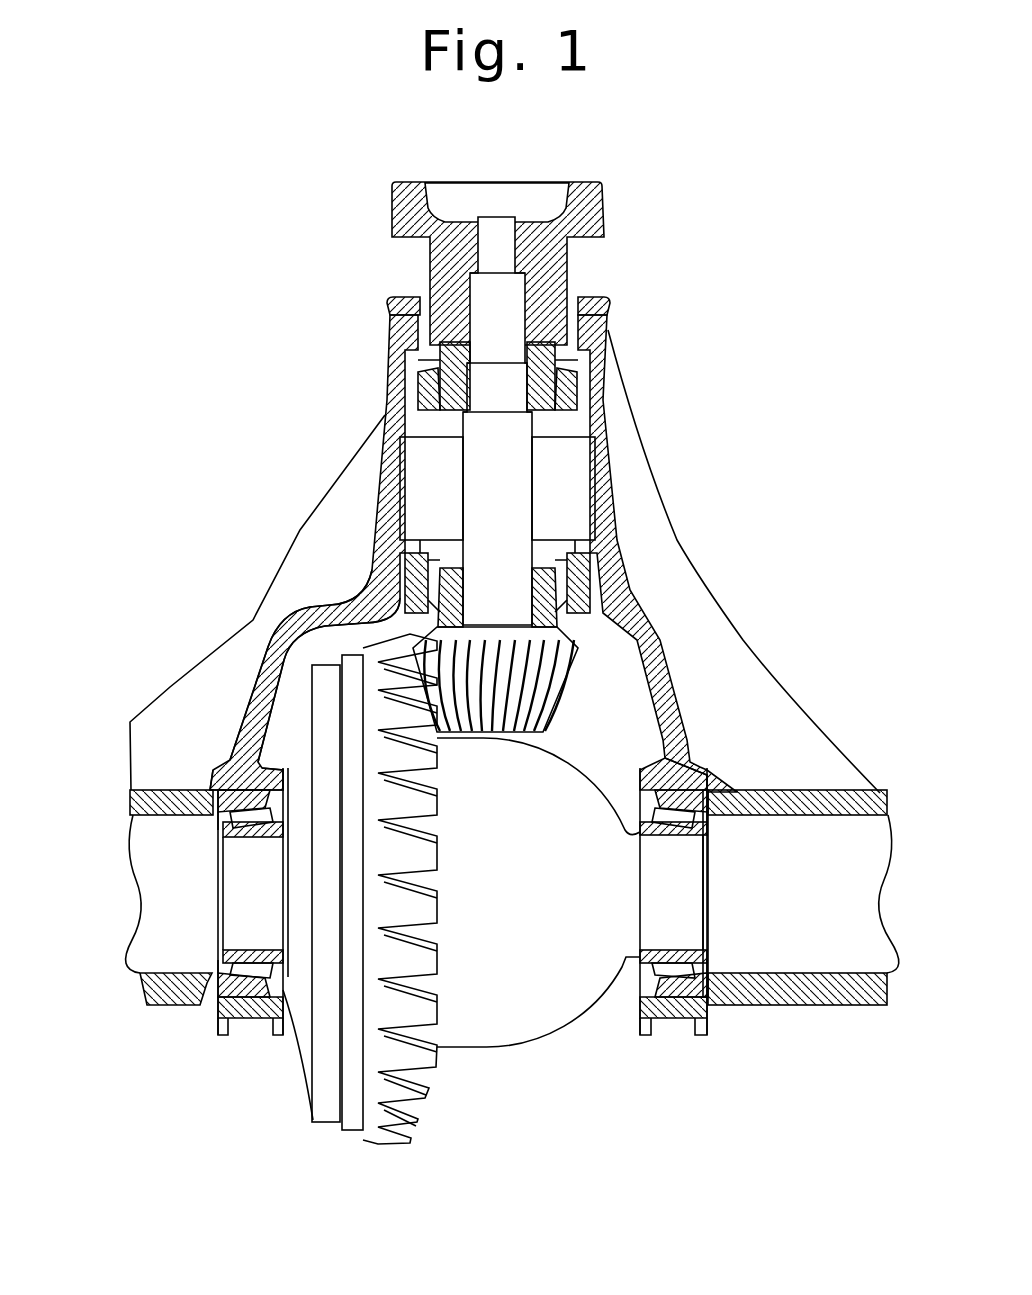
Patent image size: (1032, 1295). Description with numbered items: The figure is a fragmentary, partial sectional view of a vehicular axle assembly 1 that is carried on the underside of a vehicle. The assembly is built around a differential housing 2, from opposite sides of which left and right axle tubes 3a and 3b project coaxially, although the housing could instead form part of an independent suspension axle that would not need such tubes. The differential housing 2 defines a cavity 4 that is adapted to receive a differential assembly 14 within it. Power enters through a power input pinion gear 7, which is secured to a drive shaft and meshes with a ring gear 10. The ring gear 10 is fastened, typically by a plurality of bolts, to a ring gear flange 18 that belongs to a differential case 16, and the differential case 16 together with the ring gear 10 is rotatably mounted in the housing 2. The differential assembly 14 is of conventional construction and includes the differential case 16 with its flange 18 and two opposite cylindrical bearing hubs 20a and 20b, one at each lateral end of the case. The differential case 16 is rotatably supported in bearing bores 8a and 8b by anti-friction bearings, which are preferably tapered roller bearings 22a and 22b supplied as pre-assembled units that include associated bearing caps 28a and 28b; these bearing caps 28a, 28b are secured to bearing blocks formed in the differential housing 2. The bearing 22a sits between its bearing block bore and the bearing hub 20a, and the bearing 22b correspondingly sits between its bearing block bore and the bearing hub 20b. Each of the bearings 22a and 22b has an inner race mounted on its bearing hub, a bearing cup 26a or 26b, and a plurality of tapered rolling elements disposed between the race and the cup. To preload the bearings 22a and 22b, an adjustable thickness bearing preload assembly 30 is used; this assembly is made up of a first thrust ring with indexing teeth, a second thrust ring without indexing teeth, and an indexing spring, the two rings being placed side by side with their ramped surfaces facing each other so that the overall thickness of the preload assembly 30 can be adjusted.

The vehicular axle assembly 1 is at (825, 500).
The differential housing 2 is at (680, 728).
The left axle tube 3a is at (167, 1005).
The right axle tube 3b is at (783, 1000).
The cavity 4 is at (317, 647).
The power input pinion gear 7 is at (580, 667).
The bearing bore 8a is at (290, 977).
The bearing bore 8b is at (633, 832).
The ring gear 10 is at (437, 1097).
The differential assembly 14 is at (592, 771).
The differential case 16 is at (503, 1048).
The ring gear flange 18 is at (323, 712).
The bearing hub 20a is at (265, 910).
The bearing hub 20b is at (680, 866).
The tapered roller bearing 22a is at (205, 826).
The tapered roller bearing 22b is at (628, 995).
The bearing cup 26a is at (245, 787).
The bearing cup 26b is at (738, 792).
The bearing cap 28a is at (252, 1028).
The bearing cap 28b is at (675, 1032).
The adjustable thickness bearing preload assembly 30 is at (720, 920).